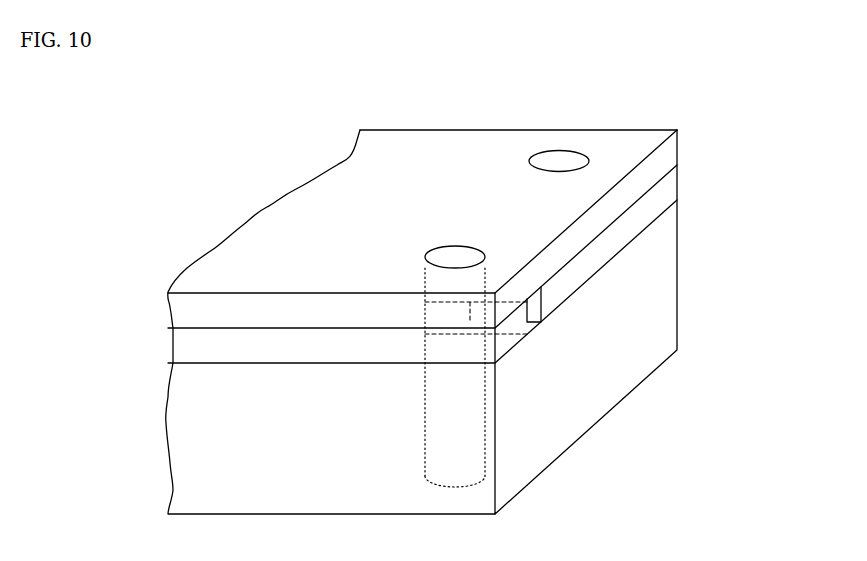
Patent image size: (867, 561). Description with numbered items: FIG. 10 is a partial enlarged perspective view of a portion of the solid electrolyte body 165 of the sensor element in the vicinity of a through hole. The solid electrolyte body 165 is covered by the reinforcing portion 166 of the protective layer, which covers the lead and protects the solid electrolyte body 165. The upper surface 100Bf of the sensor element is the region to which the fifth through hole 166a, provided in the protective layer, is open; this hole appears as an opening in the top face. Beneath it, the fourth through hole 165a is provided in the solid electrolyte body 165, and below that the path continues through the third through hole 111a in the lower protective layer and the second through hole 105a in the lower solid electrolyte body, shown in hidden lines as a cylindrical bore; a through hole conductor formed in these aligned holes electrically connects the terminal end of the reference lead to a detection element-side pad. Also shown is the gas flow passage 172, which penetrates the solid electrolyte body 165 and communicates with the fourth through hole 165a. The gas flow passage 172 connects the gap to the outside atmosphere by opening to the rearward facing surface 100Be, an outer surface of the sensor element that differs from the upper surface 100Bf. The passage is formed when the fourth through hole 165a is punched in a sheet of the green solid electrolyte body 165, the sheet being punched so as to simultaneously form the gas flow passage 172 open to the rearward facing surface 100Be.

The rearward facing surface 100Be is at (658, 282).
The upper surface 100Bf is at (473, 177).
The reinforcing portion 166 is at (412, 150).
The solid electrolyte body 165 is at (667, 193).
The fifth through hole 166a is at (428, 249).
The fourth through hole 165a is at (423, 316).
The third through hole 111a is at (367, 412).
The second through hole 105a is at (437, 433).
The gas flow passage 172 is at (543, 304).